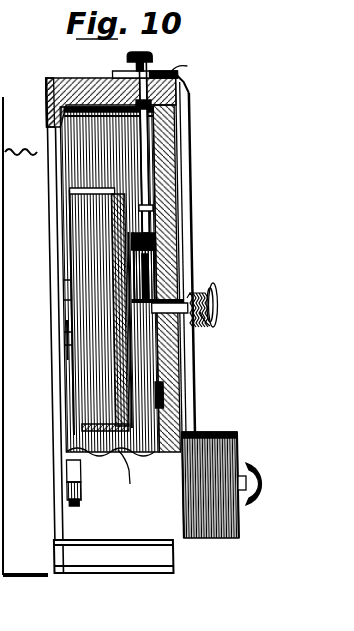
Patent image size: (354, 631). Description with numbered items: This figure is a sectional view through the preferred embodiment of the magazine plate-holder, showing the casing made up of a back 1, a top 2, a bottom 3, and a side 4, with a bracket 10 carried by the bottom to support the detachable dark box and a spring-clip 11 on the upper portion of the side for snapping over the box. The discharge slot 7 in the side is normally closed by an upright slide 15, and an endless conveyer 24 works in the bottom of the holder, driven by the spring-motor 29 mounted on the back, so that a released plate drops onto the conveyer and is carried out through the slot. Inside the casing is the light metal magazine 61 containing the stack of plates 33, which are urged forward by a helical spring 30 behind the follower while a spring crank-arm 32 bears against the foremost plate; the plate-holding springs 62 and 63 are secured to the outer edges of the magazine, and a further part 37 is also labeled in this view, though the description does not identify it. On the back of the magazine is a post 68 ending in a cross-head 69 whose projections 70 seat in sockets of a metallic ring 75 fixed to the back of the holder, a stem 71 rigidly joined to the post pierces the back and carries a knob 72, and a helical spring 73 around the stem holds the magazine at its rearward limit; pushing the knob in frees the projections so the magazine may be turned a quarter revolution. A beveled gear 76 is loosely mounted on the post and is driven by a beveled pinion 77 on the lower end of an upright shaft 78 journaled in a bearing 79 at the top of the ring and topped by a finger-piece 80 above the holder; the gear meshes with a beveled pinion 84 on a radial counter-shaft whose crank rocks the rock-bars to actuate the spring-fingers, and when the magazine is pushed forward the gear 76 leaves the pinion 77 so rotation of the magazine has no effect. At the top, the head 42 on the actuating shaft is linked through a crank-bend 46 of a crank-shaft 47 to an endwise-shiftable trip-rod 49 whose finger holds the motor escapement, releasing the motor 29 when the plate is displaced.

The back 1 is at (168, 157).
The top 2 is at (72, 78).
The bottom 3 is at (145, 534).
The side 4 is at (72, 174).
The upright slot 7 is at (81, 494).
The bracket 10 is at (3, 458).
The spring-clip 11 is at (21, 152).
The upright slide 15 is at (97, 476).
The endless conveyer 24 is at (73, 506).
The spring-motor 29 is at (218, 540).
The helical spring 30 is at (115, 406).
The spring crank-arm 32 is at (73, 291).
The stack of plates 33 is at (88, 209).
The cross bar 37 is at (112, 188).
The head 42 is at (131, 73).
The crank-bend 46 is at (184, 71).
The crank-shaft 47 is at (186, 84).
The trip-rod 49 is at (197, 423).
The magazine 61 is at (128, 476).
The spring 62 is at (70, 259).
The spring 63 is at (76, 341).
The post 68 is at (168, 355).
The cross-head 69 is at (148, 276).
The projections 70 is at (185, 234).
The stem 71 is at (185, 302).
The knob 72 is at (217, 320).
The helical spring 73 is at (208, 326).
The metallic ring 75 is at (160, 389).
The beveled gear 76 is at (118, 369).
The beveled pinion 77 is at (153, 256).
The upright shaft 78 is at (183, 133).
The bearing 79 is at (153, 214).
The finger-piece 80 is at (156, 59).
The beveled pinion 84 is at (62, 339).